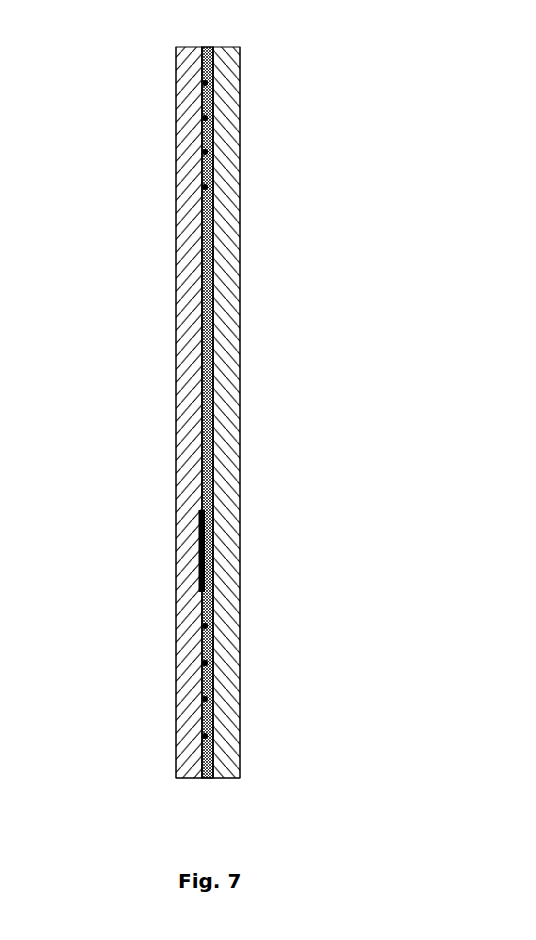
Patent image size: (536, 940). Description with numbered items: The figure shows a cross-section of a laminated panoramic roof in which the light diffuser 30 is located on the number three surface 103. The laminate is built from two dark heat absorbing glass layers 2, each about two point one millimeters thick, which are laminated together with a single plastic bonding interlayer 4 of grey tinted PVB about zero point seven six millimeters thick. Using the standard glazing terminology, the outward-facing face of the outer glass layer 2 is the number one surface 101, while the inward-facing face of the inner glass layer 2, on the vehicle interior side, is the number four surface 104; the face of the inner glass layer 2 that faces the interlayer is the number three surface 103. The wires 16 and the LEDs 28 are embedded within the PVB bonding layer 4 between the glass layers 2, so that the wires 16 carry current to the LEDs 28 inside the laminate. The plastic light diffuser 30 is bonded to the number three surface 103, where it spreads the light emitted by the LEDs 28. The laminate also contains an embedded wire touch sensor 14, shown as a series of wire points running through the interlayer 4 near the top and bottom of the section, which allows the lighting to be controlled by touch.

The glass 2 is at (173, 382).
The plastic bonding interlayer 4 is at (193, 338).
The touch sensor 14 is at (200, 83).
The wire 16 is at (207, 298).
The LED 28 is at (208, 552).
The diffuser 30 is at (197, 543).
The number one surface 101 is at (247, 288).
The number three surface 103 is at (197, 762).
The number four surface 104 is at (173, 432).